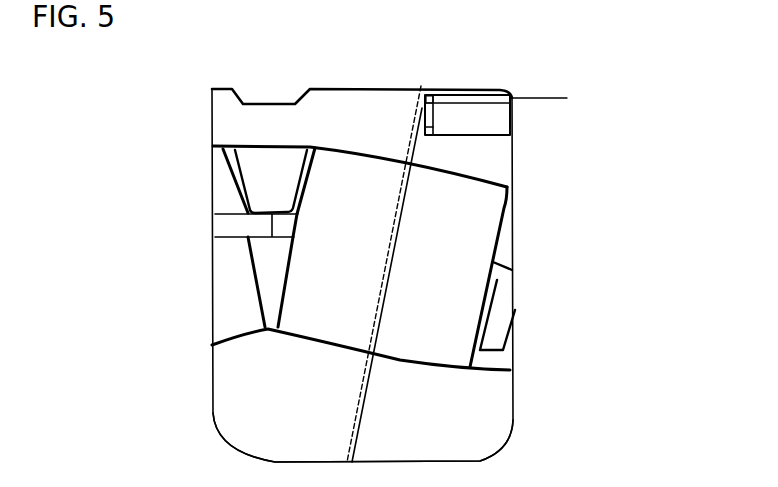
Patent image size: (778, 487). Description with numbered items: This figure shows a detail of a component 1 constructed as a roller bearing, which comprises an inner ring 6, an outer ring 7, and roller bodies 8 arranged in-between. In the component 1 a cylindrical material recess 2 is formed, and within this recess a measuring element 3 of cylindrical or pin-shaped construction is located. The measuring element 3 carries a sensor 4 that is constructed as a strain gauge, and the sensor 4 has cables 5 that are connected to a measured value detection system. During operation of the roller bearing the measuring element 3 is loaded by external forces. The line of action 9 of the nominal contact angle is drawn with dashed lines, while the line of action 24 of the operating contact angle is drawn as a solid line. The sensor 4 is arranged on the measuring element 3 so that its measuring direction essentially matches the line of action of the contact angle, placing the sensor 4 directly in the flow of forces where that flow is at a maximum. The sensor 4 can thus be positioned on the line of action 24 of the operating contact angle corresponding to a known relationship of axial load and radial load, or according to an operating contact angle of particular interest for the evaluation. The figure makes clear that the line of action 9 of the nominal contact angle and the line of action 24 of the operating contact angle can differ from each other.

The component 1 is at (652, 102).
The cylindrical material recess 2 is at (465, 138).
The measuring element 3 is at (465, 120).
The sensor 4 is at (430, 112).
The cables 5 is at (545, 97).
The inner ring 6 is at (487, 402).
The outer ring 7 is at (320, 105).
The roller bodies 8 is at (470, 242).
The line of action of the nominal contact angle 9 is at (390, 233).
The line of action of the operating contact angle 24 is at (388, 300).